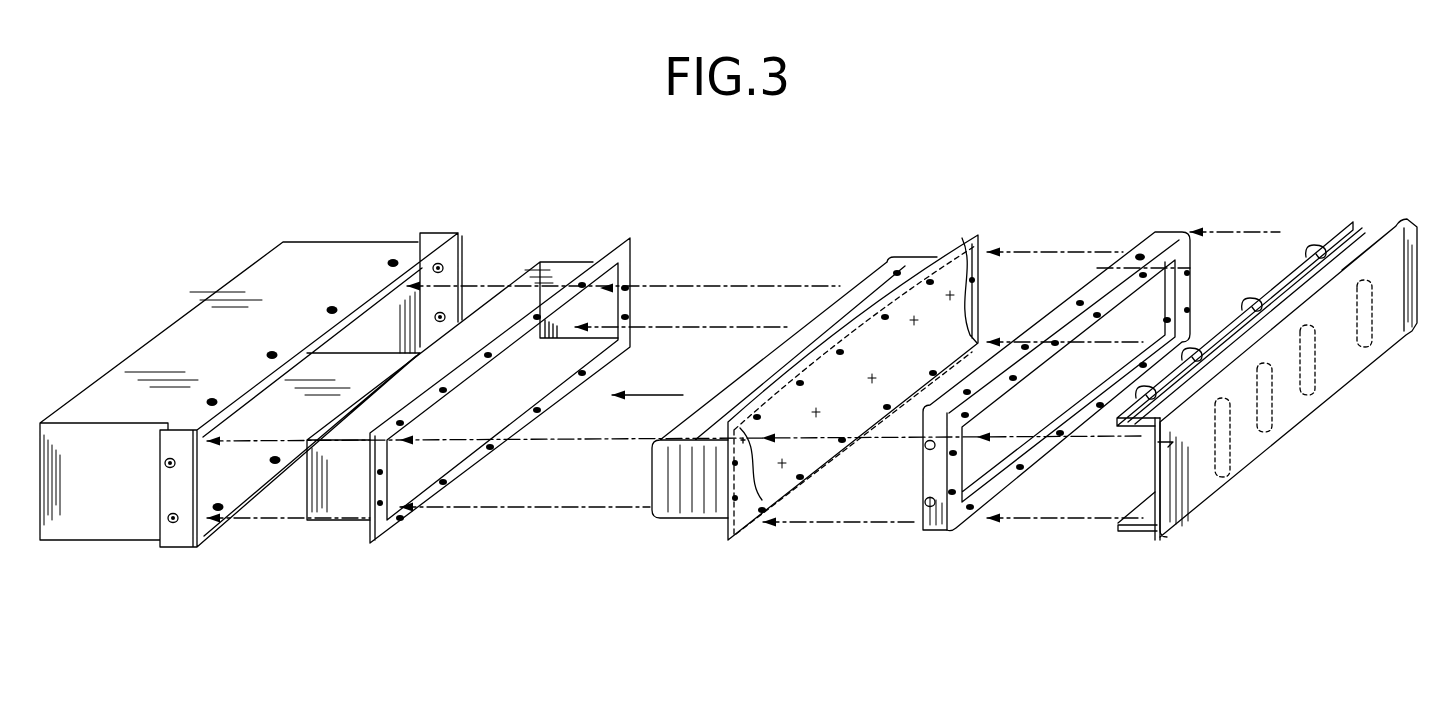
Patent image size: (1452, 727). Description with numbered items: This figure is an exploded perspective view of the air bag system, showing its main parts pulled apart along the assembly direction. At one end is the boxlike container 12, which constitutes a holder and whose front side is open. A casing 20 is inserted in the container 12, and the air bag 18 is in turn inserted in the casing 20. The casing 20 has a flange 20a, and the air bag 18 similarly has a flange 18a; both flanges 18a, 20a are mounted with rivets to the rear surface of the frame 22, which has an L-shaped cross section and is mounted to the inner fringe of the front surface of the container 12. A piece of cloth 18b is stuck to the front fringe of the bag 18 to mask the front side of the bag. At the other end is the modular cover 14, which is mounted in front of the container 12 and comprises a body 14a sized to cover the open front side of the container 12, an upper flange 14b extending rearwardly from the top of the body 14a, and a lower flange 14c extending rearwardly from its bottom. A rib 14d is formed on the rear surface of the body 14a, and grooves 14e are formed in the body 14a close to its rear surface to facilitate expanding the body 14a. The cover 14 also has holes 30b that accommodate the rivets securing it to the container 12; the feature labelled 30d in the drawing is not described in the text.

The container 12 is at (350, 252).
The casing 20 is at (517, 373).
The flange 20a is at (636, 246).
The air bag 18 is at (822, 357).
The flange 18a is at (973, 233).
The piece of cloth 18b is at (797, 453).
The frame 22 is at (1158, 240).
The modular cover 14 is at (1255, 381).
The body 14a is at (1353, 363).
The upper flange 14b is at (1330, 218).
The lower flange 14c is at (1140, 537).
The rib 14d is at (1373, 340).
The grooves 14e is at (1148, 462).
The holes 30b is at (1262, 297).
The spring clips 30d is at (1210, 350).